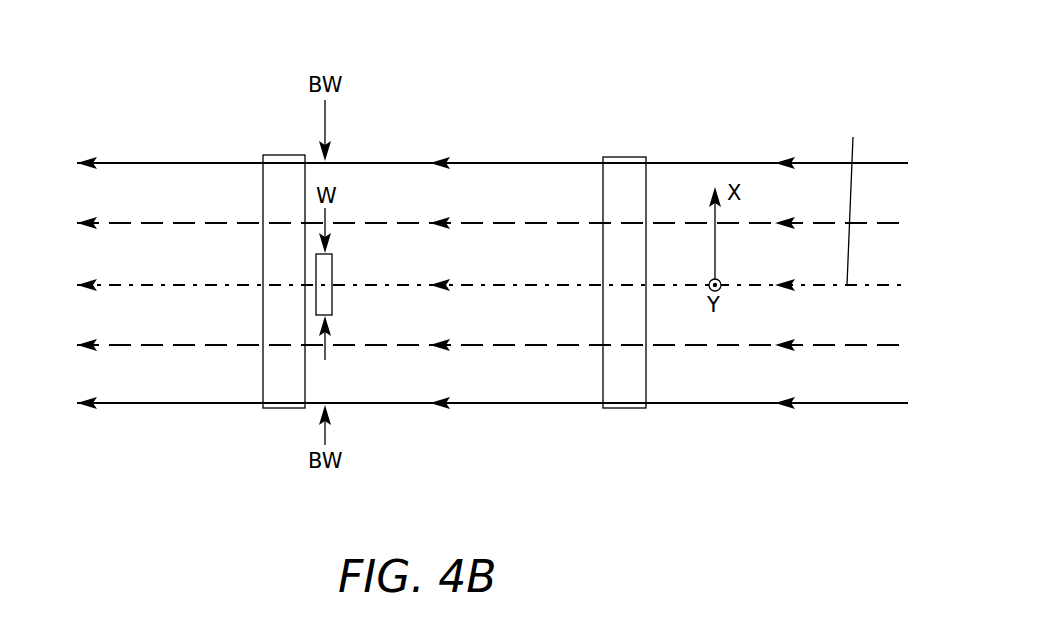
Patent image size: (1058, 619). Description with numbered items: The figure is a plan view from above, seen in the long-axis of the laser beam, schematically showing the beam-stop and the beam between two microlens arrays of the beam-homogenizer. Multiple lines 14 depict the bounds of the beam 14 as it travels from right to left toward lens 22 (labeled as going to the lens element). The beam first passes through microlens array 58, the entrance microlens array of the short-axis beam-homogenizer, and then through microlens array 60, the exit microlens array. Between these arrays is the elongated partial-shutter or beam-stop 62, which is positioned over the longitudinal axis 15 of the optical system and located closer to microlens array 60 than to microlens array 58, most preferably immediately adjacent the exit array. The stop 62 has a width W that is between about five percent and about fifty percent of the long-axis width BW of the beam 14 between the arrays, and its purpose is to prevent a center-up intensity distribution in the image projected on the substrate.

The beam 14 is at (533, 162).
The longitudinal axis 15 is at (855, 197).
The lens 22 is at (68, 283).
The microlens array 58 is at (621, 155).
The microlens array 60 is at (281, 150).
The beam-stop 62 is at (337, 272).